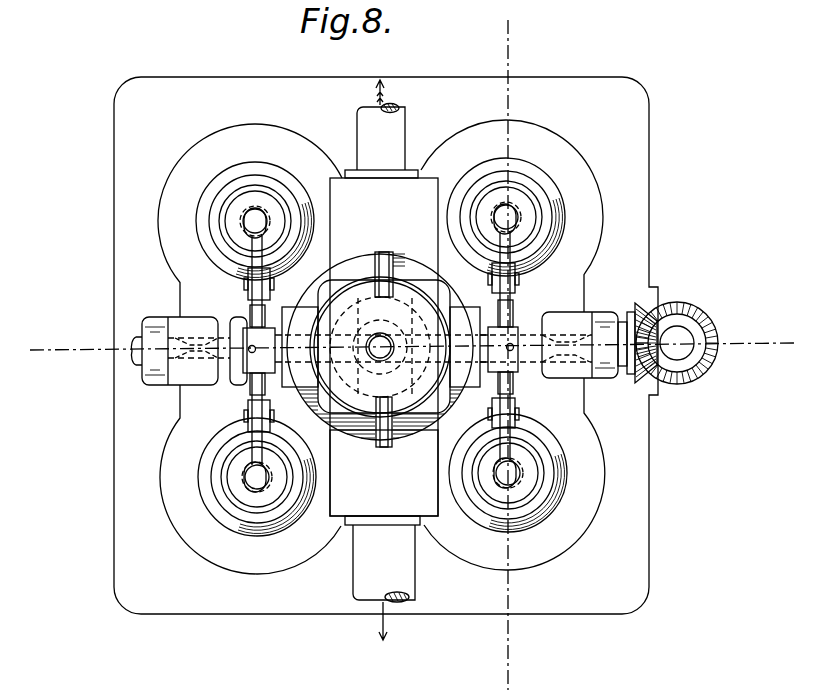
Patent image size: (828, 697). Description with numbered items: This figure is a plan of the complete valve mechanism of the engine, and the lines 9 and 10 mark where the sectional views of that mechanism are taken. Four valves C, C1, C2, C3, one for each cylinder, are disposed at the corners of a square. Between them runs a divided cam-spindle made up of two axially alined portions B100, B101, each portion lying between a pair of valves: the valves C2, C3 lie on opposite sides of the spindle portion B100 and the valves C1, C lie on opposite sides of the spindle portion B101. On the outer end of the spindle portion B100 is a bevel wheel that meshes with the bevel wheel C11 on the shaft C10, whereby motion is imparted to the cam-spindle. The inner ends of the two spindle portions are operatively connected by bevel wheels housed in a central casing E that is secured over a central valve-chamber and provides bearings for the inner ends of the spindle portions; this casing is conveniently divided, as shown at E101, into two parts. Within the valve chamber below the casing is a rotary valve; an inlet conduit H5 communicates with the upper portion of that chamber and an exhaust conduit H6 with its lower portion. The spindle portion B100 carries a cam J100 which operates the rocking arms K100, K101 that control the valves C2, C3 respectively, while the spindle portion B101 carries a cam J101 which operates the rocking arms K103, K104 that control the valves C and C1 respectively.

The section line 9— 9 is at (86, 333).
The section line 10— 10 is at (532, 55).
The central casing E is at (358, 312).
The division of casing E101 is at (381, 445).
The inlet conduit H5 is at (400, 118).
The exhaust conduit H6 is at (383, 572).
The cam-spindle portion B101 is at (196, 340).
The cam-spindle portion B100 is at (576, 333).
The bevel wheel C11 is at (700, 309).
The shaft C10 is at (680, 345).
The valve C1 is at (238, 222).
The valve C2 is at (520, 215).
The valve C is at (240, 480).
The valve C3 is at (522, 478).
The rocking arm K103 is at (250, 236).
The rocking arm K104 is at (242, 442).
The cam J101 is at (247, 356).
The rocking arm K100 is at (518, 235).
The rocking arm K101 is at (518, 426).
The cam J100 is at (505, 345).